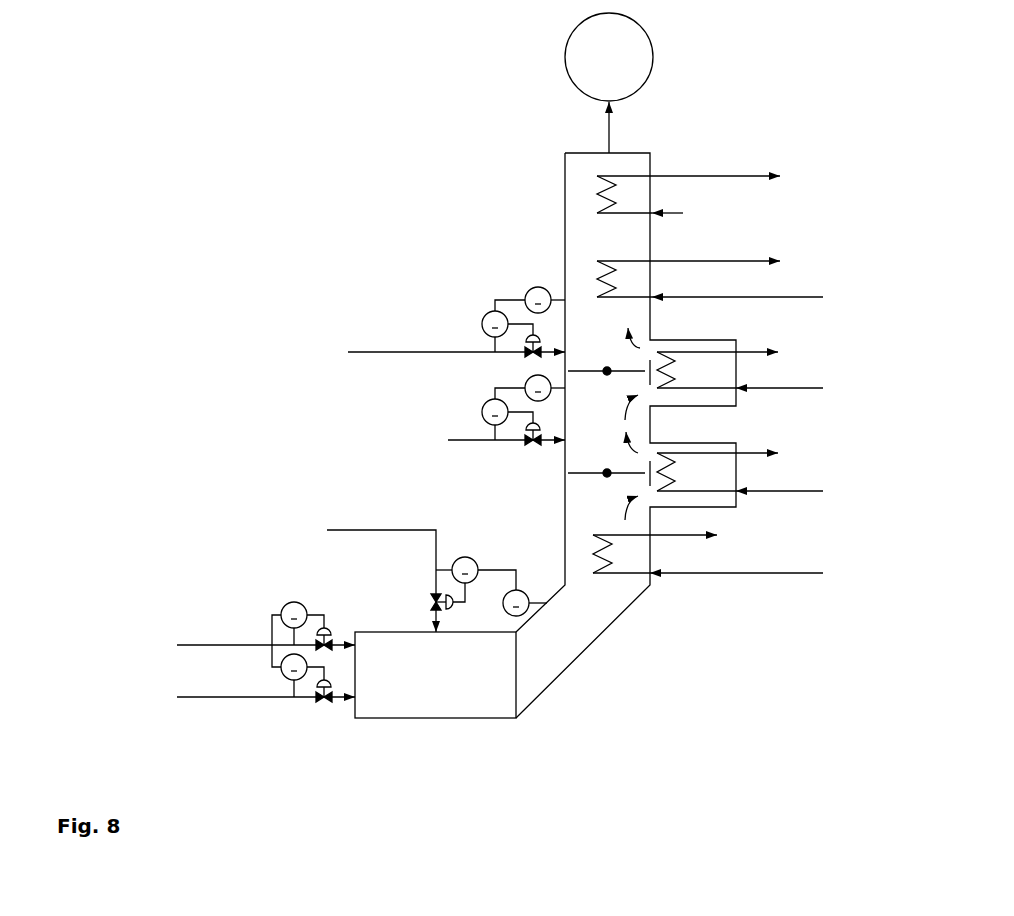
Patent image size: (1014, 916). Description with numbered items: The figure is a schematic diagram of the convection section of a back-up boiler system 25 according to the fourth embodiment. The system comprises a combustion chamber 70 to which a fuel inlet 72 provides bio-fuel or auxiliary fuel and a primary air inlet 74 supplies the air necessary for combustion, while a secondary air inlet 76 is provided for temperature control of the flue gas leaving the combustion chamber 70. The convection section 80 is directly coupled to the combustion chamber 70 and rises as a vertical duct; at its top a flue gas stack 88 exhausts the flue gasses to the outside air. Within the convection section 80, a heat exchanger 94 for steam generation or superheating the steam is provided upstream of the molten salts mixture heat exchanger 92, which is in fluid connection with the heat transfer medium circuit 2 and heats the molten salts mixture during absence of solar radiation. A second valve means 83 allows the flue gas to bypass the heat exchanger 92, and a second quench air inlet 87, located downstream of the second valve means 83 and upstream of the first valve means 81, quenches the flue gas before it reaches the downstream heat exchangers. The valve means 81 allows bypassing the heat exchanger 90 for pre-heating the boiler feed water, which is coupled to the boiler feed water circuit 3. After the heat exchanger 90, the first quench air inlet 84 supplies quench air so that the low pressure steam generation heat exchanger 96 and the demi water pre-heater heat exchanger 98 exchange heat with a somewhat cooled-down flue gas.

The back-up boiler system 25 is at (419, 209).
The flue gas stack 88 is at (609, 83).
The demi water pre-heater heat exchanger 98 is at (688, 194).
The low pressure steam generation heat exchanger 96 is at (710, 279).
The heat exchanger for pre-heating the boiler feed water 90 is at (717, 370).
The molten salts mixture heat exchanger 92 is at (717, 472).
The heat exchanger for steam generation or superheating the steam 94 is at (708, 554).
The boiler feed water circuit 3 is at (779, 375).
The heat transfer medium circuit 2 is at (779, 476).
The valve means 81 is at (609, 363).
The second valve means 83 is at (609, 464).
The quench air inlet 84 is at (456, 322).
The second quench air inlet 87 is at (498, 410).
The convection section 80 is at (582, 632).
The combustion chamber 70 is at (453, 688).
The secondary air inlet 76 is at (437, 565).
The fuel inlet 72 is at (266, 634).
The primary air inlet 74 is at (266, 678).